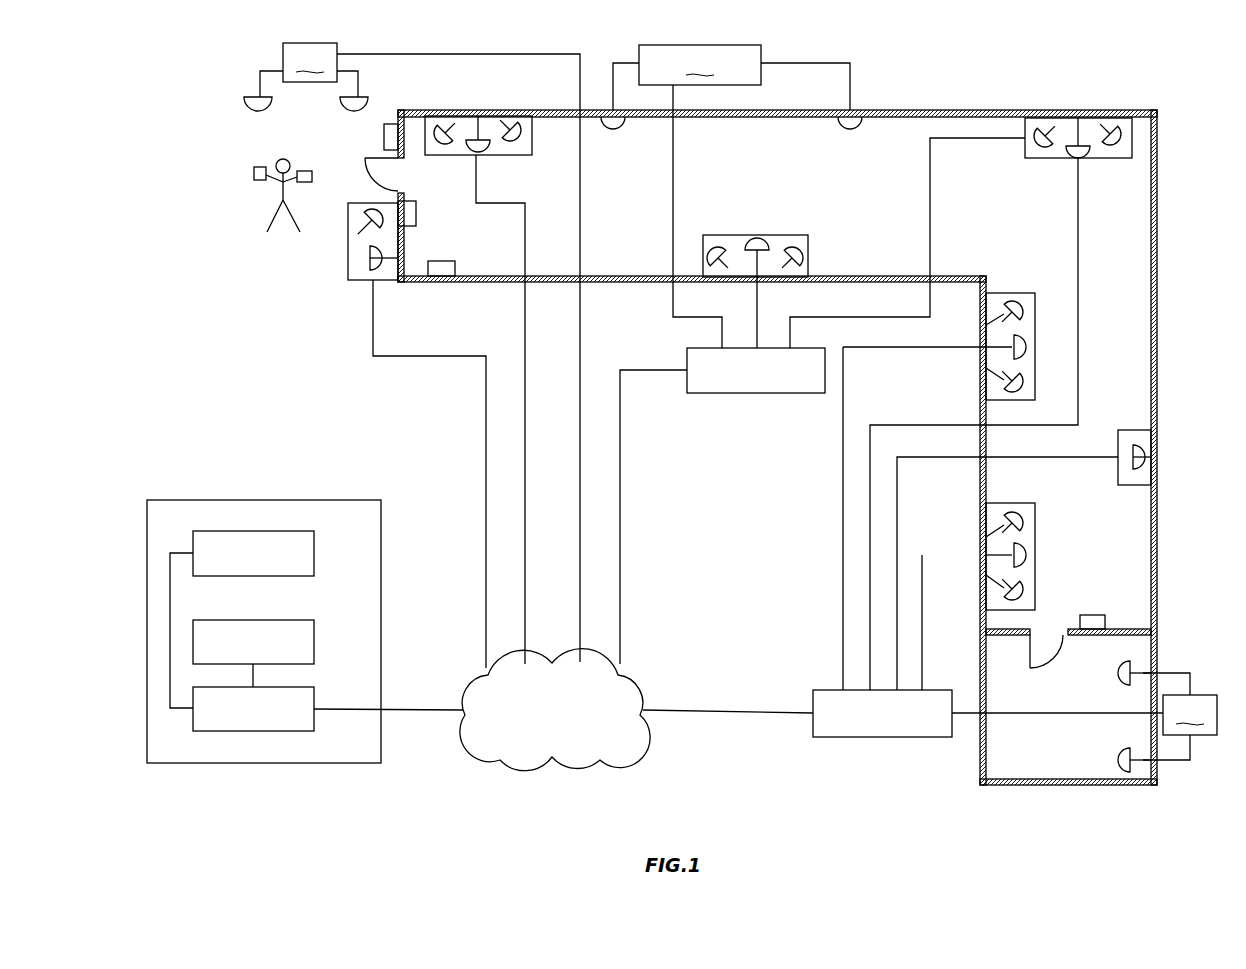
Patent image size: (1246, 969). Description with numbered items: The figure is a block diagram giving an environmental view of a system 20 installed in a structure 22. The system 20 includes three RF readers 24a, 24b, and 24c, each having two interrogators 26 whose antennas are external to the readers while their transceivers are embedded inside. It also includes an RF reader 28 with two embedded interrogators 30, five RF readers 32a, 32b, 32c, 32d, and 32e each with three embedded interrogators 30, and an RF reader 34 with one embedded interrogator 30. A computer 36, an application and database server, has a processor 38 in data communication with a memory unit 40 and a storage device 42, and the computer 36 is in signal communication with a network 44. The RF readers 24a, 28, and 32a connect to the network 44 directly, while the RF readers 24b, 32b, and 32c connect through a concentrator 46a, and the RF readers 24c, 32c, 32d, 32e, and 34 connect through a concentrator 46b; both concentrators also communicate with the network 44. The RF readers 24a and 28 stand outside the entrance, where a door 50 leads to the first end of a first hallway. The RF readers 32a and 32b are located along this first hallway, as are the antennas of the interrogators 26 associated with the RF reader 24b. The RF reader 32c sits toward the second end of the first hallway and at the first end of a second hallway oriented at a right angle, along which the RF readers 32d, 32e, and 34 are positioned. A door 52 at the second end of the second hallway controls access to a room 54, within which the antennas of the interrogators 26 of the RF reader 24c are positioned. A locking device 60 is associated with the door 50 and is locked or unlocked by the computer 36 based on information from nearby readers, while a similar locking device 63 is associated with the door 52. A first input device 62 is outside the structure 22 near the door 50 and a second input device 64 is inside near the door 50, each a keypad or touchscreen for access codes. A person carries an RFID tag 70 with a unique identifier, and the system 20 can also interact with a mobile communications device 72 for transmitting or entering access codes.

The system 20 is at (186, 93).
The structure 22 is at (1150, 110).
The RF reader 24a is at (420, 352).
The RF reader 24b is at (731, 196).
The RF reader 24c is at (1180, 716).
The interrogator 26 is at (246, 101).
The RF reader 28 is at (348, 250).
The embedded interrogator 30 is at (516, 137).
The RF reader 32a is at (520, 158).
The RF reader 32b is at (806, 238).
The RF reader 32c is at (1058, 158).
The RF reader 32d is at (1094, 293).
The RF reader 32e is at (1008, 503).
The RF reader 34 is at (1130, 430).
The computer 36 is at (342, 500).
The processor 38 is at (314, 697).
The memory unit 40 is at (314, 637).
The storage device 42 is at (314, 549).
The network 44 is at (541, 745).
The concentrator 46a is at (786, 393).
The concentrator 46b is at (908, 737).
The door 50 is at (386, 160).
The door 52 is at (1028, 652).
The room 54 is at (1070, 702).
The locking device 60 is at (418, 214).
The first input device 62 is at (384, 138).
The locking device 63 is at (1092, 615).
The second input device 64 is at (441, 261).
The RFID tag 70 is at (312, 176).
The mobile communications device 72 is at (254, 172).